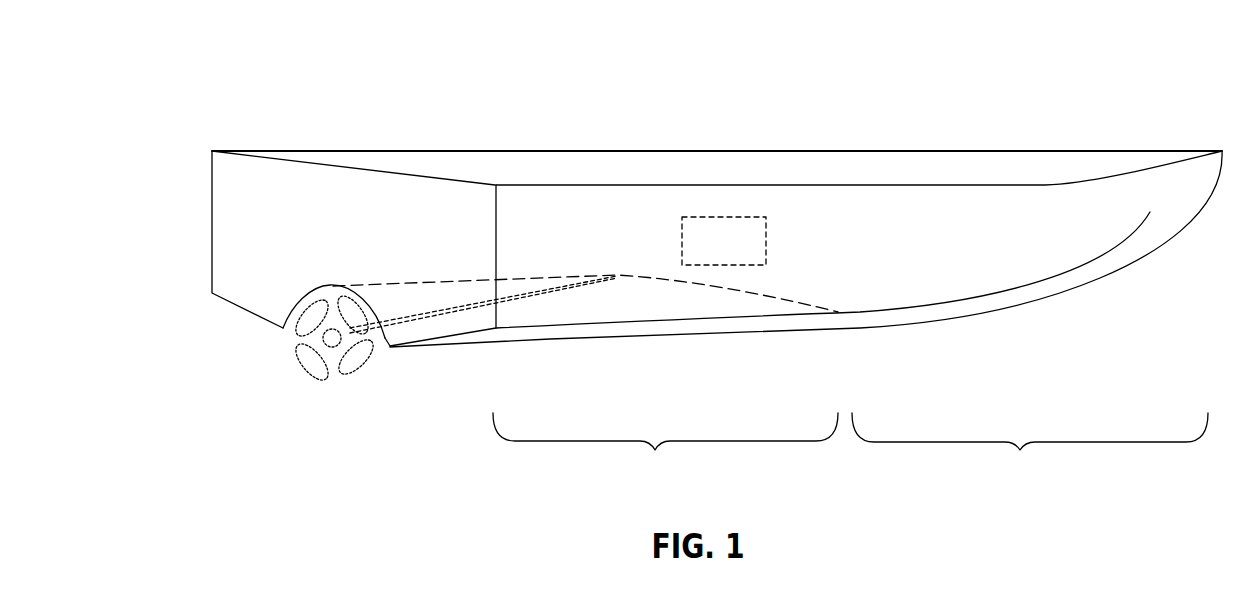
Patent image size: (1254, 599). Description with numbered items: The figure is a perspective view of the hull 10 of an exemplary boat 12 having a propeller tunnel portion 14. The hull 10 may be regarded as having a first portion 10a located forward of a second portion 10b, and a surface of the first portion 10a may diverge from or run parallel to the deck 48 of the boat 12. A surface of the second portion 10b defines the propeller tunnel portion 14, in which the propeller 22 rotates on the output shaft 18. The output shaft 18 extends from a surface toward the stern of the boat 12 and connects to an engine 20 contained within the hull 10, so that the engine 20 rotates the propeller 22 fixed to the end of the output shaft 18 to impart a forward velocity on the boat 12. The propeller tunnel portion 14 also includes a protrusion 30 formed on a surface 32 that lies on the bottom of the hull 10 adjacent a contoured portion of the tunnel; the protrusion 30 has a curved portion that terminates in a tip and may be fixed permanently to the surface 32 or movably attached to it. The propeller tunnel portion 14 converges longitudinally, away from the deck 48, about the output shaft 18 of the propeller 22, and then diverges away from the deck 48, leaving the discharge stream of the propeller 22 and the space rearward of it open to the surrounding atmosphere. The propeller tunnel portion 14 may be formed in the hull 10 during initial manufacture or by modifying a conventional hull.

The hull 10 is at (892, 317).
The first portion 10a is at (1030, 447).
The second portion 10b is at (665, 447).
The boat 12 is at (875, 122).
The propeller tunnel portion 14 is at (587, 347).
The output shaft member 18 is at (550, 287).
The engine 20 is at (724, 241).
The propeller 22 is at (312, 387).
The protrusion 30 is at (387, 345).
The surface 32 is at (405, 300).
The deck 48 is at (695, 165).